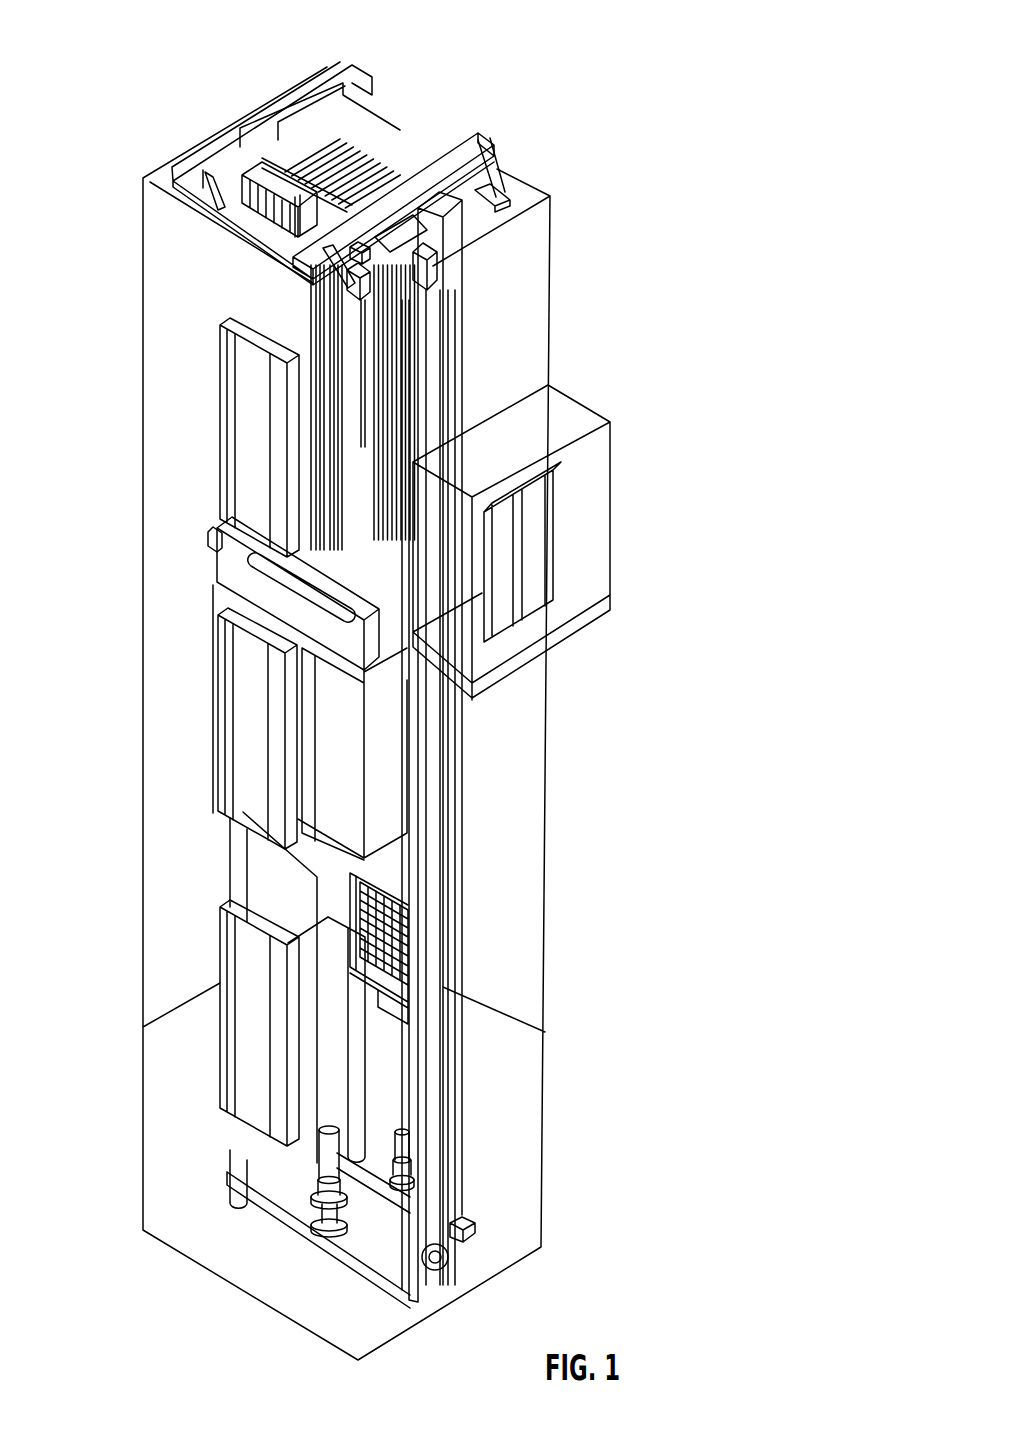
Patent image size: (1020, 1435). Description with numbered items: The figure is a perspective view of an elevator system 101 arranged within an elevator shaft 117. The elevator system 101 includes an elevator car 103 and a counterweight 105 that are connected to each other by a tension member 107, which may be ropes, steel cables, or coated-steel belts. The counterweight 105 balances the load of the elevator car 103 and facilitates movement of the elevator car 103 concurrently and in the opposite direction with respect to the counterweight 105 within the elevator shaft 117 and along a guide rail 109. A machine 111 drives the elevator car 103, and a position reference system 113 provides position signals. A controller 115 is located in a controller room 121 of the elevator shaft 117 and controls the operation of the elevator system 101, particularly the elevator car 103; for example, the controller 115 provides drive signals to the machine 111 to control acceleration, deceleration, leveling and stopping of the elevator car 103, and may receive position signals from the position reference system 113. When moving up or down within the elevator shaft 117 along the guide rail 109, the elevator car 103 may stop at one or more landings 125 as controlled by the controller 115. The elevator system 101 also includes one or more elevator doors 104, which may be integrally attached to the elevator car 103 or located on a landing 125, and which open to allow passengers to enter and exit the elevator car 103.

The elevator system 101 is at (566, 91).
The elevator car 103 is at (342, 756).
The elevator door 104 is at (253, 738).
The counterweight 105 is at (410, 950).
The tension member 107 is at (345, 428).
The guide rail 109 is at (432, 875).
The machine 111 is at (250, 170).
The position reference system 113 is at (543, 200).
The controller 115 is at (545, 555).
The elevator shaft 117 is at (200, 880).
The controller room 121 is at (613, 419).
The landing 125 is at (215, 420).